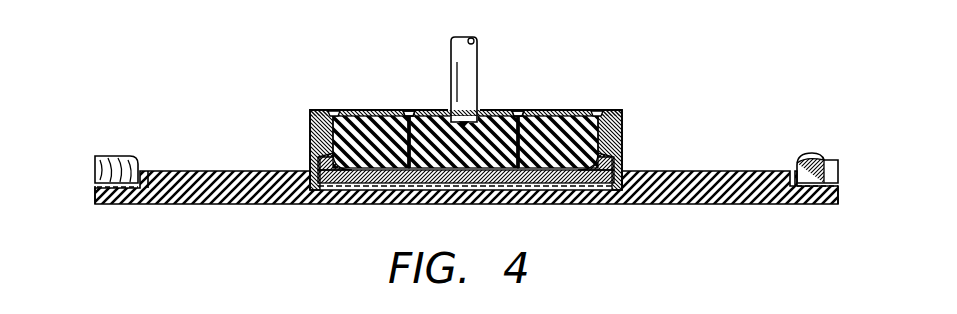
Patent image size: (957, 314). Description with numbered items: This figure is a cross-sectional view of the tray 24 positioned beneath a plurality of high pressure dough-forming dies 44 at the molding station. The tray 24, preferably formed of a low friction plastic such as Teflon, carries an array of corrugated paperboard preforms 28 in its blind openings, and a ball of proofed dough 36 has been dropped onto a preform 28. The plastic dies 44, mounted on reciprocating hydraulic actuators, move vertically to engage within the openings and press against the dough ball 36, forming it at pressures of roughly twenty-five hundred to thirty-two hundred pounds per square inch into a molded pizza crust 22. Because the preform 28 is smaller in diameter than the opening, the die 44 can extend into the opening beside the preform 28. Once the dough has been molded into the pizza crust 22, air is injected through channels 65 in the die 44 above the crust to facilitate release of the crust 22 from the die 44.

The pizza crust 22 is at (797, 162).
The tray 24 is at (731, 172).
The corrugated paperboard preform 28 is at (97, 187).
The dough ball 36 is at (98, 155).
The plastic die 44 is at (622, 157).
The air channels 65 is at (418, 110).